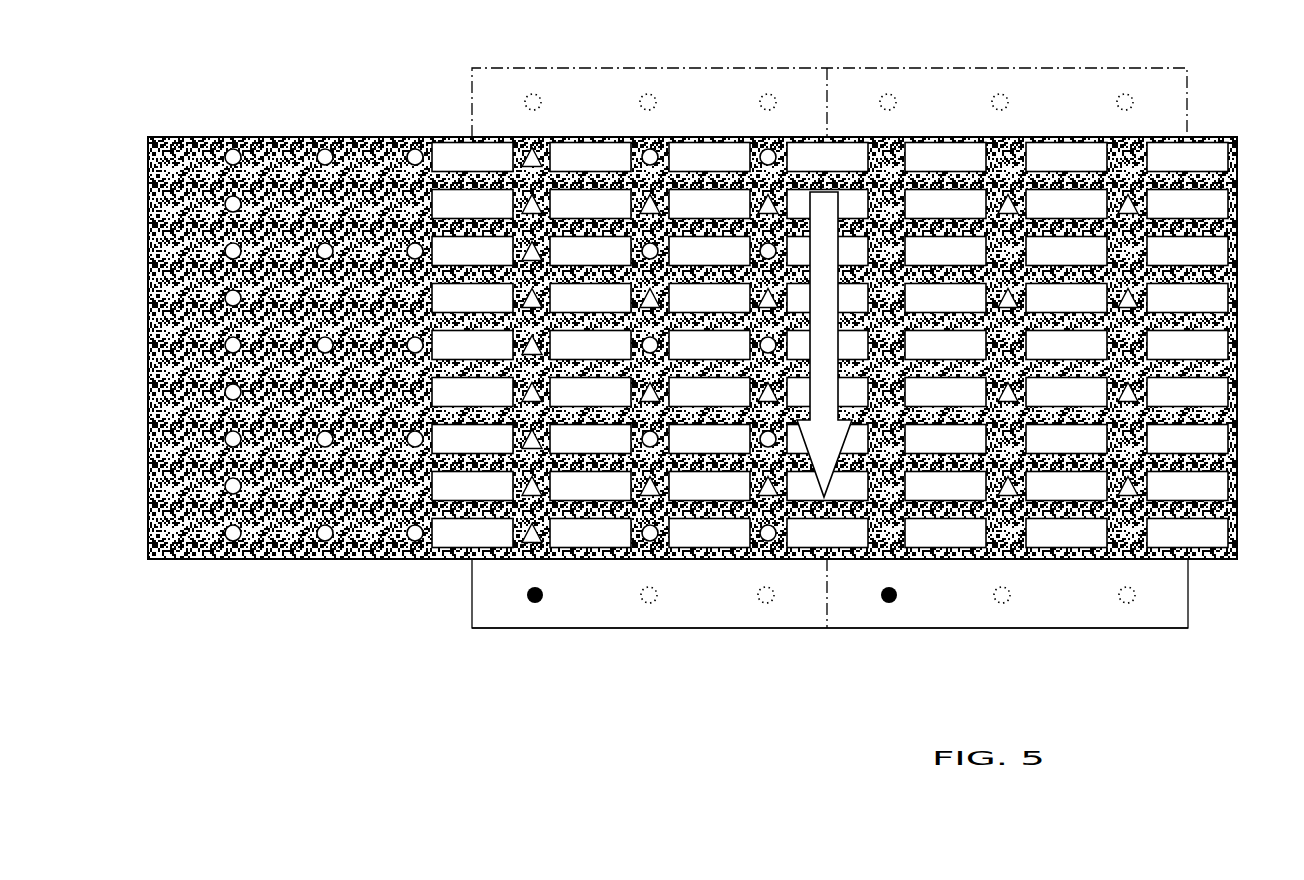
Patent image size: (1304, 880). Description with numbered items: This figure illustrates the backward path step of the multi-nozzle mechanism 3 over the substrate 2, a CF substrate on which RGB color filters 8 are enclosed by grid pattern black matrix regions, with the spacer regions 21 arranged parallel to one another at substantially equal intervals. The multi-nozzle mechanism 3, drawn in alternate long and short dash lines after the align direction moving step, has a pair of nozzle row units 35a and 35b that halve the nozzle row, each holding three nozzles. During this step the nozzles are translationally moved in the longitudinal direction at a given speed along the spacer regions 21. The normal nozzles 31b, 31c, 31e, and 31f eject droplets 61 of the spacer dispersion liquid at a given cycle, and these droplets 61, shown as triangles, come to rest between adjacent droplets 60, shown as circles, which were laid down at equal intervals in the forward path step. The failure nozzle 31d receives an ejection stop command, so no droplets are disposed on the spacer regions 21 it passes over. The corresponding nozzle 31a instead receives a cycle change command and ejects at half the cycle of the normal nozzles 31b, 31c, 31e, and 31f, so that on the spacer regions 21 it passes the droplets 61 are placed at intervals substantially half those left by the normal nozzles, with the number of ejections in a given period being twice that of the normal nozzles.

The substrate 2 is at (714, 354).
The multi-nozzle mechanism 3 is at (840, 395).
The RGB color filters 8 is at (1200, 152).
The spacer regions 21 is at (887, 520).
The corresponding nozzle 31a is at (538, 93).
The normal nozzle 31b is at (652, 93).
The normal nozzle 31c is at (770, 93).
The failure nozzle 31d is at (891, 95).
The normal nozzle 31e is at (1002, 95).
The normal nozzle 31f is at (1127, 95).
The nozzle row unit 35a is at (700, 632).
The nozzle row unit 35b is at (866, 641).
The droplets 60 is at (235, 149).
The droplets 61 is at (1012, 195).